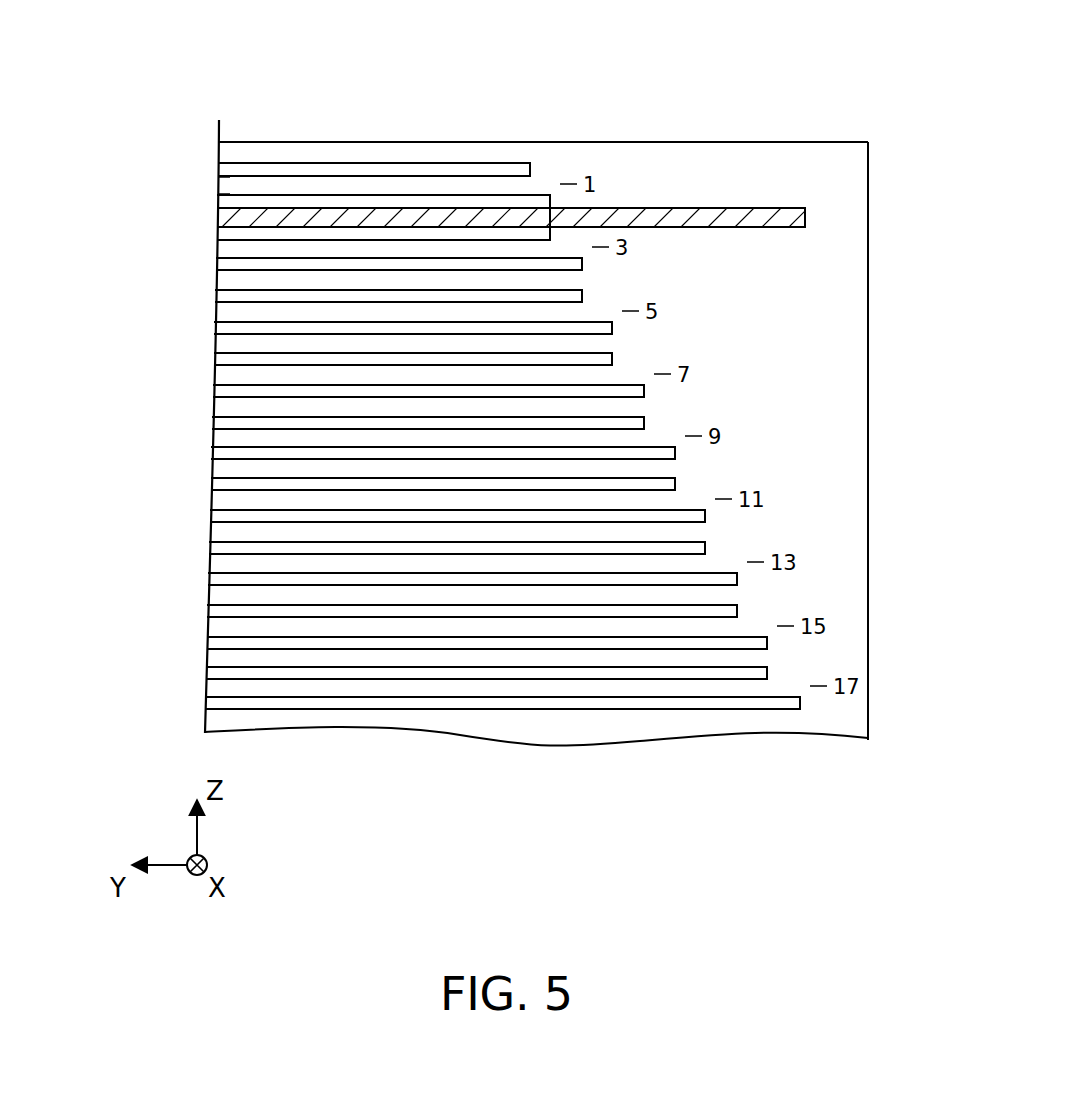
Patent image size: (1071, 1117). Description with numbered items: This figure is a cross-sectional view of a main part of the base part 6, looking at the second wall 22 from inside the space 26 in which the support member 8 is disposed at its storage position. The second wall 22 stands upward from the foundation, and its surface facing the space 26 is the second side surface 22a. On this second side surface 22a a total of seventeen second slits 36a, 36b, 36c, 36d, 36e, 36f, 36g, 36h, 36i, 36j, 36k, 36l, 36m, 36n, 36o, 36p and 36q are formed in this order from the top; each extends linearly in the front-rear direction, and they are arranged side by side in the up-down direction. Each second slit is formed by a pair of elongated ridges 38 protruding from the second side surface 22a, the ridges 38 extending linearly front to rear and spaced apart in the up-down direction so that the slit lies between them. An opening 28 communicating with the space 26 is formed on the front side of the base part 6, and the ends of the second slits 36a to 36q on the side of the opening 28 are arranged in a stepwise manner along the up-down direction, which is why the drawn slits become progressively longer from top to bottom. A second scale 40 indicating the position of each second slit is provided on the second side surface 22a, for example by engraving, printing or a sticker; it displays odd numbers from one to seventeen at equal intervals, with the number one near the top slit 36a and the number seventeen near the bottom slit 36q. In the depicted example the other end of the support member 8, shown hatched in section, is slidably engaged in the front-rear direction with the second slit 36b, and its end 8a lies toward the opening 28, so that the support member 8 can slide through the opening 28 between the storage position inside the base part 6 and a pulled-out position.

The base part 6 is at (879, 86).
The support member 8 is at (806, 216).
The end of wiring 8a is at (707, 206).
The second wall 22 is at (830, 286).
The second side surface 22a is at (828, 348).
The space 26 is at (765, 342).
The opening 28 is at (855, 446).
The ridges 38 is at (474, 200).
The second scale 40 is at (798, 492).
The second slit 36a is at (230, 185).
The second slit 36b is at (230, 213).
The second slit 36c is at (229, 248).
The second slit 36d is at (228, 280).
The second slit 36e is at (228, 310).
The second slit 36f is at (227, 342).
The second slit 36g is at (226, 373).
The second slit 36h is at (225, 405).
The second slit 36i is at (225, 437).
The second slit 36j is at (224, 468).
The second slit 36k is at (223, 500).
The second slit 36l is at (222, 532).
The second slit 36m is at (222, 562).
The second slit 36n is at (221, 595).
The second slit 36o is at (220, 625).
The second slit 36p is at (220, 657).
The second slit 36q is at (219, 690).